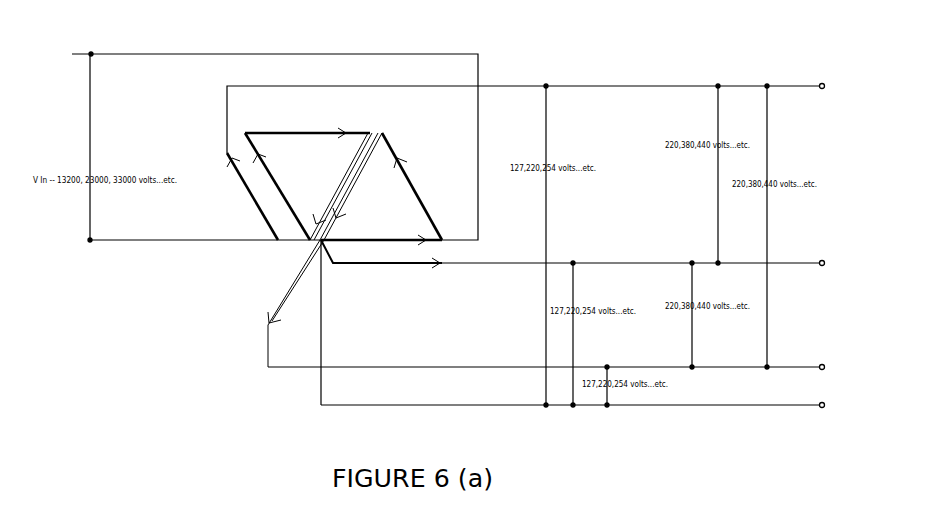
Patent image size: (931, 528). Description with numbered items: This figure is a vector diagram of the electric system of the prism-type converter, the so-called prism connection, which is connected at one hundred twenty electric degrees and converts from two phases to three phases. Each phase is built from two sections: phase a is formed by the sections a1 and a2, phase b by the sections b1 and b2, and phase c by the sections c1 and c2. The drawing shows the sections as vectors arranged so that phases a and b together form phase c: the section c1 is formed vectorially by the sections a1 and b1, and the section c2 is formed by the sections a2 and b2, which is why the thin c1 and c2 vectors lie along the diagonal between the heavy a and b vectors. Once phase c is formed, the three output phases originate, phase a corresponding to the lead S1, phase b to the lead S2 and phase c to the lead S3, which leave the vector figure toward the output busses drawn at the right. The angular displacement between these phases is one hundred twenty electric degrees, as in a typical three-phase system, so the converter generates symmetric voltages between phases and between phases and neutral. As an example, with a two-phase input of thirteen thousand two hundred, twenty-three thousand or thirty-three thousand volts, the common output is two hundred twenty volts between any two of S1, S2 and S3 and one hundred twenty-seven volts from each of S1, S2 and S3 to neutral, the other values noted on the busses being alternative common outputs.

The section of phase a a1 is at (381, 235).
The section of phase a a2 is at (307, 137).
The section of phase b b1 is at (412, 186).
The section of phase b b2 is at (277, 186).
The section of phase c c1 is at (351, 186).
The section of phase c c2 is at (341, 186).
The output phase lead S1 is at (381, 258).
The output phase lead S2 is at (252, 196).
The output phase lead S3 is at (296, 303).